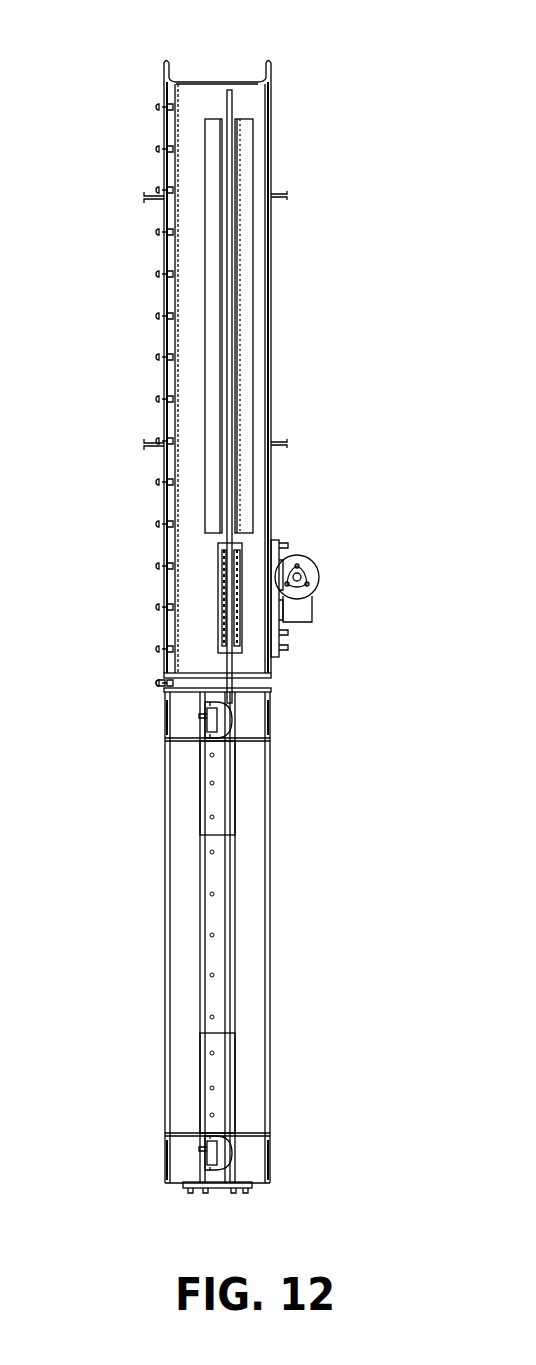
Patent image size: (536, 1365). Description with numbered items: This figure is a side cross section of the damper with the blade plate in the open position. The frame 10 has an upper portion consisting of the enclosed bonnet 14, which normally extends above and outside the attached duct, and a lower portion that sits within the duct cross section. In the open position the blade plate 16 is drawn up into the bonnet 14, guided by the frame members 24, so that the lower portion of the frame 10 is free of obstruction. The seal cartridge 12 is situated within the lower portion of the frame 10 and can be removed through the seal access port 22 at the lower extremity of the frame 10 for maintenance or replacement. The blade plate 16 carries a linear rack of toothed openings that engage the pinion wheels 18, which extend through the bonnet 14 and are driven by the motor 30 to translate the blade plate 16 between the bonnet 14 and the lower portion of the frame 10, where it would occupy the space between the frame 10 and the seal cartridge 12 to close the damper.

The frame 10 is at (253, 847).
The seal cartridge 12 is at (210, 960).
The bonnet 14 is at (199, 92).
The blade plate 16 is at (232, 102).
The pinion wheels 18 is at (240, 548).
The seal access port 22 is at (215, 1190).
The frame members 24 is at (245, 189).
The motor 30 is at (310, 569).